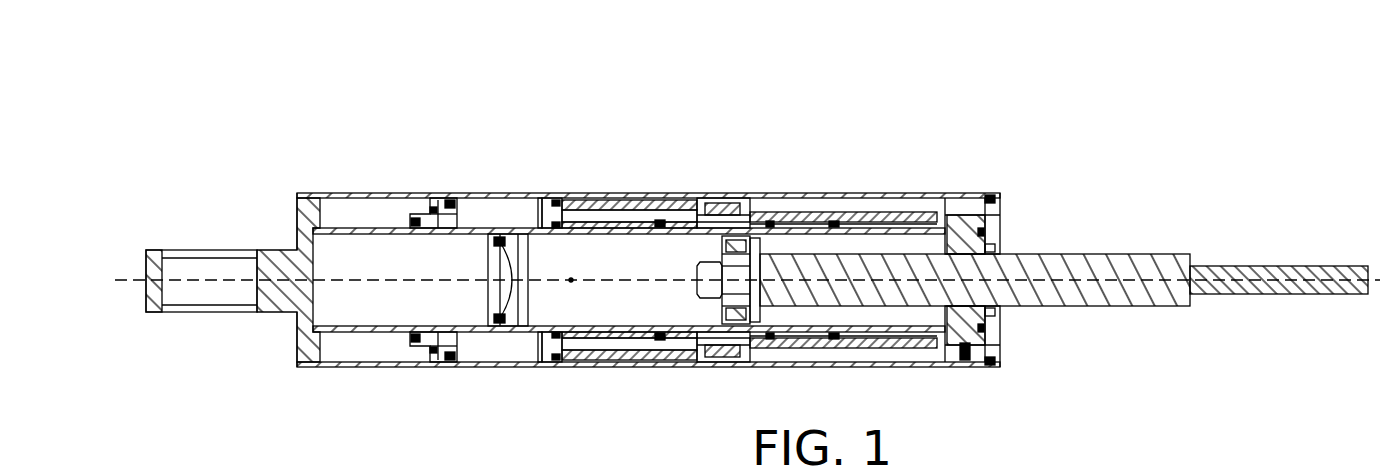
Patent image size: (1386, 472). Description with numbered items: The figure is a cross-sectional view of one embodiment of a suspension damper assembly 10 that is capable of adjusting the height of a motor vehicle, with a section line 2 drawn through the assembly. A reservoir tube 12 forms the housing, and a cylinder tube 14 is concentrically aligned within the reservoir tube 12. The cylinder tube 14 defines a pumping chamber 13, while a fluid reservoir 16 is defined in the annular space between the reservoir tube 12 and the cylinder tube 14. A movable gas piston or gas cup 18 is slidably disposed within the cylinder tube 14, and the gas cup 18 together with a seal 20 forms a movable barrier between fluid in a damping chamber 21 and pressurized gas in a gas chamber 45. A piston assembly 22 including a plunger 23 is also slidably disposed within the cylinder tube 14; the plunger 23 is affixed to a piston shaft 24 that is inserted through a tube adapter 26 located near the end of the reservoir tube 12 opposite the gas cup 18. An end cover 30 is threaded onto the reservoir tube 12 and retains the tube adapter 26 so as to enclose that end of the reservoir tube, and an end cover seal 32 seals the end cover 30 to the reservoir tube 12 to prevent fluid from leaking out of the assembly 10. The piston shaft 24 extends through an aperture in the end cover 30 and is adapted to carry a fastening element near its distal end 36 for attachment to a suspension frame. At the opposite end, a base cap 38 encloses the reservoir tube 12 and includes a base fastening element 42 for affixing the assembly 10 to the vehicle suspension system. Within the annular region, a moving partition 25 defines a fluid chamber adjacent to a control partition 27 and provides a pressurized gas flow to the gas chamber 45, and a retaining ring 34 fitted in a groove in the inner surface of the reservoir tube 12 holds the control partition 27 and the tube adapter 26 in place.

The section line 2- 2 is at (115, 280).
The suspension damper assembly 10 is at (1190, 170).
The reservoir tube 12 is at (345, 195).
The pumping chamber 13 is at (583, 312).
The cylinder tube 14 is at (367, 196).
The fluid reservoir 16 is at (688, 356).
The gas cup 18 is at (476, 196).
The seal 20 is at (500, 327).
The damping chamber 21 is at (568, 270).
The piston assembly 22 is at (710, 218).
The plunger 23 is at (697, 265).
The piston shaft 24 is at (853, 252).
The moving partition 25 is at (410, 196).
The tube adapter 26 is at (895, 213).
The control partition 27 is at (567, 197).
The end cover 30 is at (1000, 203).
The end cover seal 32 is at (992, 366).
The retaining ring 34 is at (540, 196).
The distal end 36 is at (1323, 265).
The base cap 38 is at (288, 360).
The base fastening element 42 is at (197, 313).
The gas chamber 45 is at (390, 320).